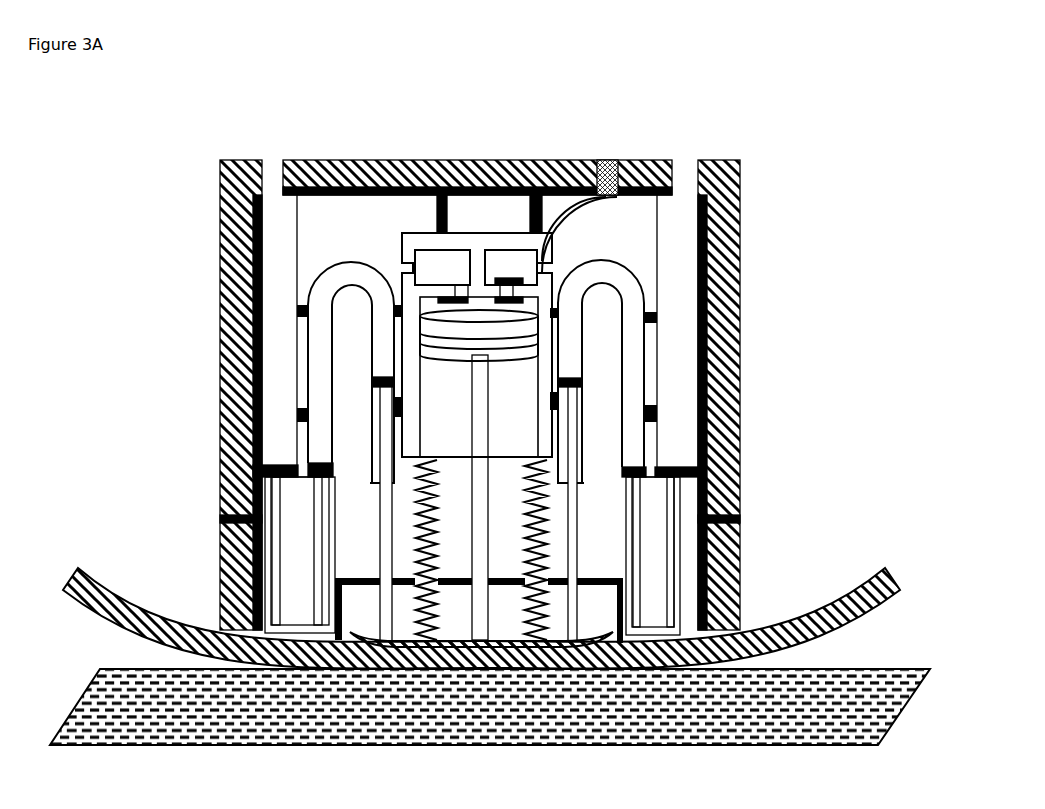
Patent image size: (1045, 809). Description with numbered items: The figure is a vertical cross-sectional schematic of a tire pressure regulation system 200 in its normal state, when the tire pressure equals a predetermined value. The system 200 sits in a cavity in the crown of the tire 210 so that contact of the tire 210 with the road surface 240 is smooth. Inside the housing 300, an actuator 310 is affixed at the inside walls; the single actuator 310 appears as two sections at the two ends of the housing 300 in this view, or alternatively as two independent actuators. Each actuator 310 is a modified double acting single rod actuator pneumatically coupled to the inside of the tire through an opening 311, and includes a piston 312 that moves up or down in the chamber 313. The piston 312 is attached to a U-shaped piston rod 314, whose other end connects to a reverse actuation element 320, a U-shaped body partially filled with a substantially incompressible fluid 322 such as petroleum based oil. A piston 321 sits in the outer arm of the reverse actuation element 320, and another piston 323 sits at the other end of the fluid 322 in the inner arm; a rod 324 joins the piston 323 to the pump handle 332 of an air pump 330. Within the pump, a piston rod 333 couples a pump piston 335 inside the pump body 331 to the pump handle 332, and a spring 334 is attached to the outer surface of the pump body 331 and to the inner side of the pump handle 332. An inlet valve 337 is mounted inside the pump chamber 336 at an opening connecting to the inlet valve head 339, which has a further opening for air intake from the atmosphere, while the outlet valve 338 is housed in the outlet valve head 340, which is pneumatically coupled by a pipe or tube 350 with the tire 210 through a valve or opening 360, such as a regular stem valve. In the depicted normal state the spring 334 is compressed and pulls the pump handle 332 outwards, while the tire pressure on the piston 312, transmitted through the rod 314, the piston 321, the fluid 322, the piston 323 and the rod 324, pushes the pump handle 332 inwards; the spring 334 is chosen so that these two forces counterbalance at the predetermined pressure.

The pressure regulation system 200 is at (172, 133).
The housing 300 is at (220, 222).
The opening 311 is at (276, 152).
The actuator 310 is at (299, 240).
The chamber 313 is at (686, 279).
The inlet valve head 339 is at (422, 243).
The inlet valve 337 is at (443, 297).
The outlet valve 338 is at (510, 273).
The outlet valve head 340 is at (517, 242).
The pipe or tube 350 is at (578, 232).
The valve or opening 360 is at (598, 152).
The substantially incompressible fluid 322 is at (378, 327).
The piston 323 is at (383, 373).
The reverse actuation element 320 is at (305, 370).
The piston 321 is at (317, 465).
The rod 324 is at (372, 523).
The pump handle 332 is at (348, 638).
The tire 210 is at (76, 560).
The road surface 240 is at (90, 672).
The pump chamber 336 is at (534, 350).
The pump piston 335 is at (530, 306).
The pump body 331 is at (552, 425).
The piston 312 is at (684, 462).
The piston rod 314 is at (548, 512).
The spring 334 is at (494, 550).
The piston rod 333 is at (603, 658).
The air pump 330 is at (700, 666).